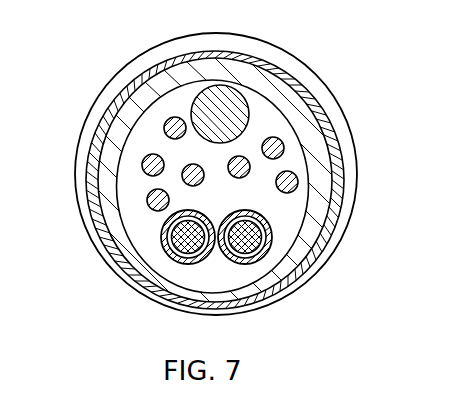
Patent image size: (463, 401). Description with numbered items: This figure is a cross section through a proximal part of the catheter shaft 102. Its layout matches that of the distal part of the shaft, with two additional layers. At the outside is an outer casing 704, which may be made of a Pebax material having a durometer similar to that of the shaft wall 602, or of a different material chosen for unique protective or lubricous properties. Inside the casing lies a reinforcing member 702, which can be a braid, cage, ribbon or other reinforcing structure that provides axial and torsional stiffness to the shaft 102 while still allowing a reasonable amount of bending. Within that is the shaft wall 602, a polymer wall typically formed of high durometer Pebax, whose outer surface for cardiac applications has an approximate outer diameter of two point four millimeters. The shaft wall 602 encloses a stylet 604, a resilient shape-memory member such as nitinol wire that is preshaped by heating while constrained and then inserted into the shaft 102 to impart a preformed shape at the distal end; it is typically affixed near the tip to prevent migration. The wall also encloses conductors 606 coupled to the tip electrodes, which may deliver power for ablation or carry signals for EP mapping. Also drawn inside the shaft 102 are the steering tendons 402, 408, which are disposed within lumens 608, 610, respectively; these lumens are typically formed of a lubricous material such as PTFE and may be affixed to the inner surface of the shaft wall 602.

The catheter shaft 102 is at (108, 55).
The steering tendon 402 is at (167, 257).
The steering tendon 408 is at (264, 256).
The shaft wall 602 is at (105, 165).
The stylet 604 is at (247, 75).
The conductors 606 is at (283, 142).
The lumen 608 is at (158, 232).
The lumen 610 is at (270, 232).
The reinforcing member 702 is at (343, 188).
The outer casing 704 is at (322, 92).